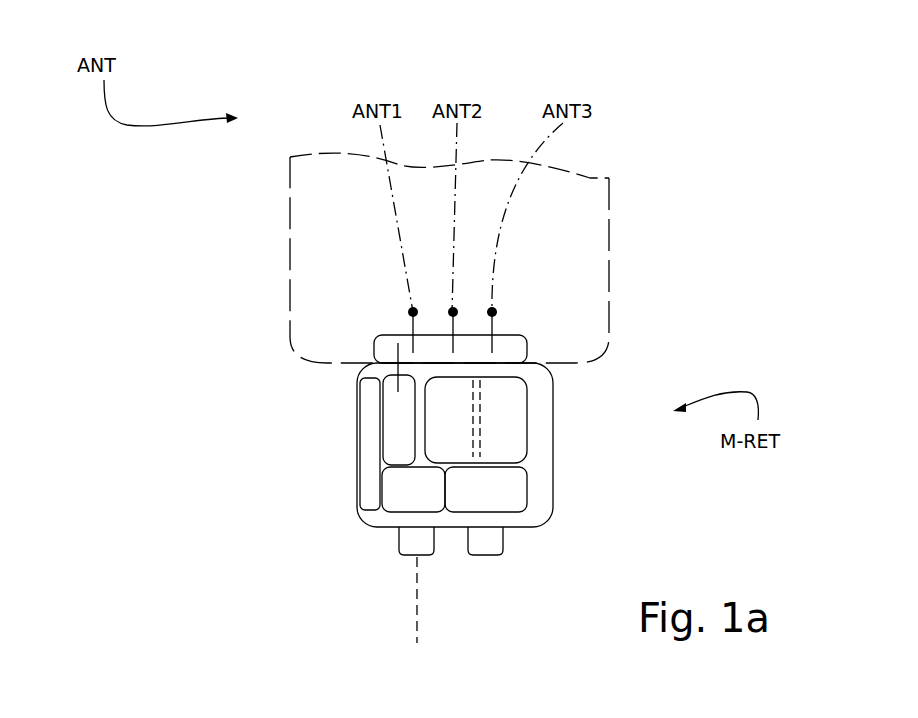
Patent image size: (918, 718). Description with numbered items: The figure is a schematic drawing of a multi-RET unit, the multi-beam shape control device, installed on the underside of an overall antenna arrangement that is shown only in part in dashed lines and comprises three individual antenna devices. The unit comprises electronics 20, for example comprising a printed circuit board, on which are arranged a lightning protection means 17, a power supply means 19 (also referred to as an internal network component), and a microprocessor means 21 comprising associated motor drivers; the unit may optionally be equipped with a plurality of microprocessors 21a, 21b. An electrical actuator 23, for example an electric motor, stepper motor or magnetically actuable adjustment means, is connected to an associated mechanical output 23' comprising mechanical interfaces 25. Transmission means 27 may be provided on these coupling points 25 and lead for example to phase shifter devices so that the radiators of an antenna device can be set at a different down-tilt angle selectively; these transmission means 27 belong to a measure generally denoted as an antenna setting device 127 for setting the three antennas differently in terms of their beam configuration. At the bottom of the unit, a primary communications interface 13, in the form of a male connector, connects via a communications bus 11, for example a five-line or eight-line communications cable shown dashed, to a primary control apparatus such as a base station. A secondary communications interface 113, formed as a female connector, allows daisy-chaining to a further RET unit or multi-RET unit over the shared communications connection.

The antenna setting device 127 is at (634, 221).
The transmission means 27 is at (447, 218).
The mechanical interfaces 25 is at (456, 307).
The mechanical output 23' is at (520, 346).
The electronics 20 is at (367, 468).
The electrical actuator 23 is at (351, 404).
The microprocessor means 21 is at (503, 411).
The microprocessor 21a is at (442, 448).
The microprocessor 21b is at (502, 427).
The lightning protection means 17 is at (405, 492).
The power supply means 19 is at (493, 493).
The communications interface 13 is at (415, 542).
The secondary communications interface 113 is at (488, 542).
The communications bus 11 is at (417, 637).